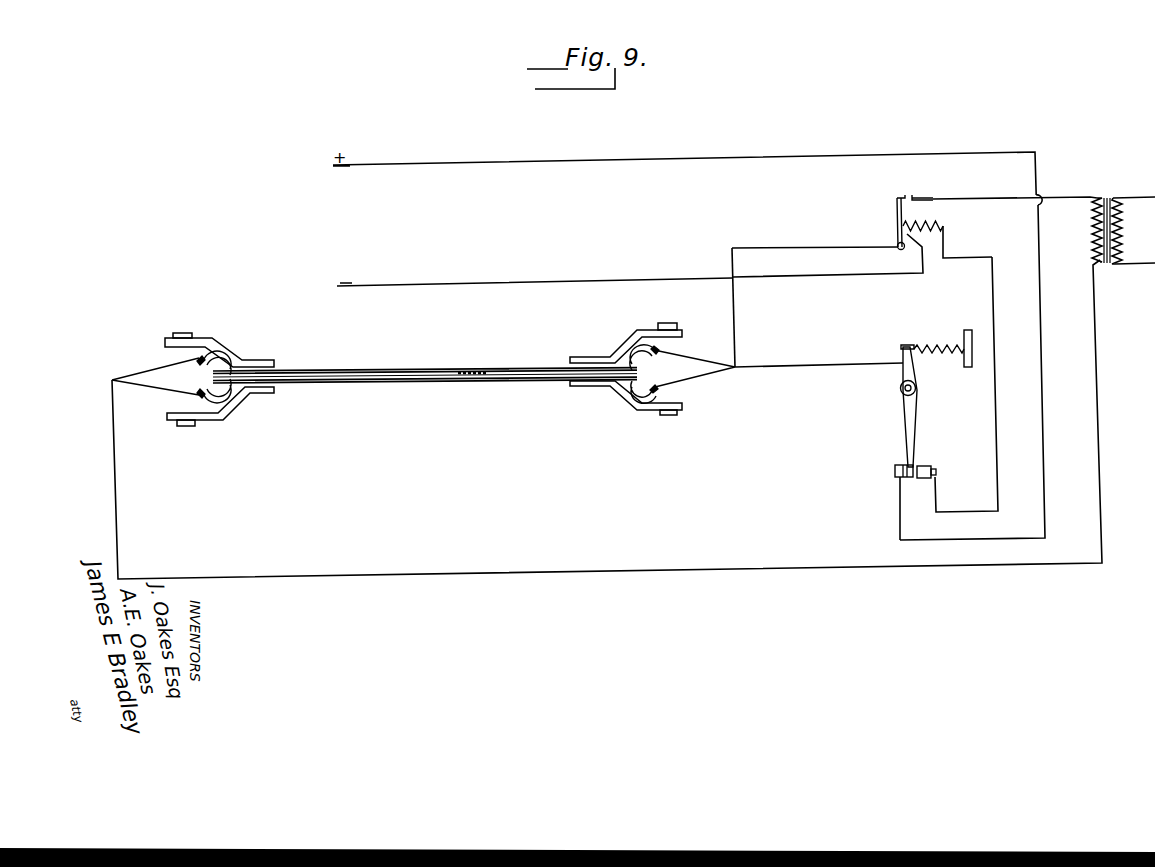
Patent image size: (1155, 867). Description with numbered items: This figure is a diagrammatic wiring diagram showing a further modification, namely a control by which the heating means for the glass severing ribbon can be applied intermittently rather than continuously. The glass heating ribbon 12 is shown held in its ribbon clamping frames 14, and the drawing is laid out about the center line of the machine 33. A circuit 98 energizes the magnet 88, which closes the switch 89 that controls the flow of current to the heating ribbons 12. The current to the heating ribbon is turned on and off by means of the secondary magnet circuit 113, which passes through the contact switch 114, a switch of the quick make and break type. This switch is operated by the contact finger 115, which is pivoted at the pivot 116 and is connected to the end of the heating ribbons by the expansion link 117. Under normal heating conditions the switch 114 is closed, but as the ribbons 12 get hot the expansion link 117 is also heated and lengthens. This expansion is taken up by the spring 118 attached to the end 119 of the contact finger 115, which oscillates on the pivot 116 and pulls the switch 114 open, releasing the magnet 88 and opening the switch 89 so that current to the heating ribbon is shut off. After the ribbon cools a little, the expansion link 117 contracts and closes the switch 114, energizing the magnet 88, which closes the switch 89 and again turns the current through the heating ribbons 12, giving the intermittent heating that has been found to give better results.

The heating ribbon 12 is at (347, 351).
The ribbon clamping frame 14 is at (202, 307).
The center line of the machine 33 is at (477, 370).
The circuit 98 is at (595, 283).
The switch 89 is at (900, 197).
The magnet 88 is at (946, 225).
The secondary magnet circuit 113 is at (1036, 403).
The contact switch 114 is at (976, 450).
The contact finger 115 is at (905, 436).
The pivot 116 is at (900, 391).
The expansion link 117 is at (826, 348).
The spring 118 is at (974, 296).
The end of the contact finger 119 is at (920, 332).